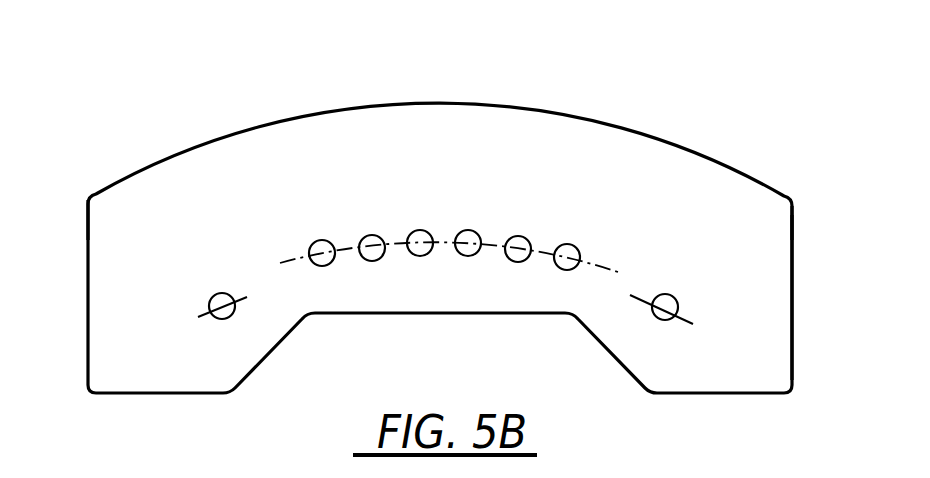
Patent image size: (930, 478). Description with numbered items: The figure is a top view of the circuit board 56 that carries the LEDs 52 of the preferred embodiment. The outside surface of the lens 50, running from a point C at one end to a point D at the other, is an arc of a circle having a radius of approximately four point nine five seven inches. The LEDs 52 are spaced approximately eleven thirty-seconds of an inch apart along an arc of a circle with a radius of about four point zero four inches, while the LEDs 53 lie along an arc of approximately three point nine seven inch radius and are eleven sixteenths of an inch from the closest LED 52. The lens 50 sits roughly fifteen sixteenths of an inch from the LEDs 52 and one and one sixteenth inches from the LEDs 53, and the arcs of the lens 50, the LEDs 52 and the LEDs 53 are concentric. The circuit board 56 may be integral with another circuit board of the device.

The lens 50 is at (617, 125).
The LEDs 52 is at (410, 233).
The LEDs 53 is at (226, 320).
The circuit board 56 is at (793, 293).
The point C is at (86, 191).
The point D is at (795, 198).